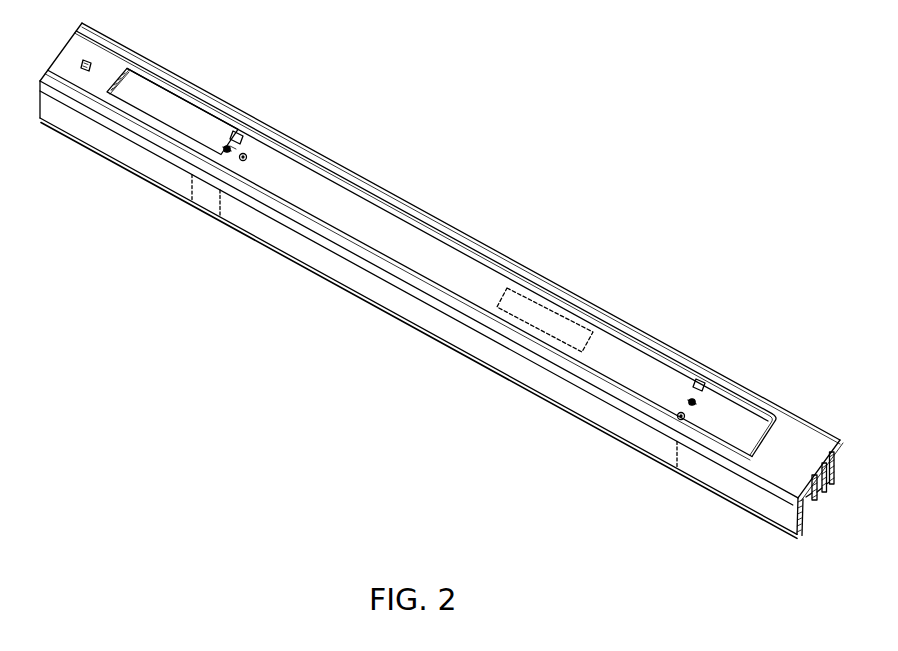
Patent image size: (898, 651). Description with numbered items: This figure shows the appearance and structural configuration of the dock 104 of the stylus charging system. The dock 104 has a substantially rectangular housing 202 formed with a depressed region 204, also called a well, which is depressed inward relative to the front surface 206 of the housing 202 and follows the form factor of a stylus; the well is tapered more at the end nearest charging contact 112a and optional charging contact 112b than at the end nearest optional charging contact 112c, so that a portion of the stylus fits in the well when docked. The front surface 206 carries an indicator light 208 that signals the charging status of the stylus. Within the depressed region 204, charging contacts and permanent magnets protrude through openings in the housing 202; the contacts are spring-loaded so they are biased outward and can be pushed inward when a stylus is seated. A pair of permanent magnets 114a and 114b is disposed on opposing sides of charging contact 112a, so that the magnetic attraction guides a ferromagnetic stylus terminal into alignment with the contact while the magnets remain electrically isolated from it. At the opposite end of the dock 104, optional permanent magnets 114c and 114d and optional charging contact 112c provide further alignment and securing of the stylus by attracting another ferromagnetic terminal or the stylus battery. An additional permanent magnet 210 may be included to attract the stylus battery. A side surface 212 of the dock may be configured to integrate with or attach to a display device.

The dock 104 is at (547, 105).
The housing 202 is at (771, 396).
The depressed region 204 is at (386, 218).
The front surface 206 is at (118, 57).
The indicator light 208 is at (80, 63).
The permanent magnet 210 is at (556, 312).
The side surface 212 is at (152, 163).
The permanent magnet 114a is at (238, 130).
The permanent magnet 114b is at (225, 149).
The permanent magnet 114c is at (703, 382).
The permanent magnet 114d is at (679, 414).
The charging contact 112a is at (233, 146).
The charging contact 112b is at (247, 158).
The charging contact 112c is at (694, 406).